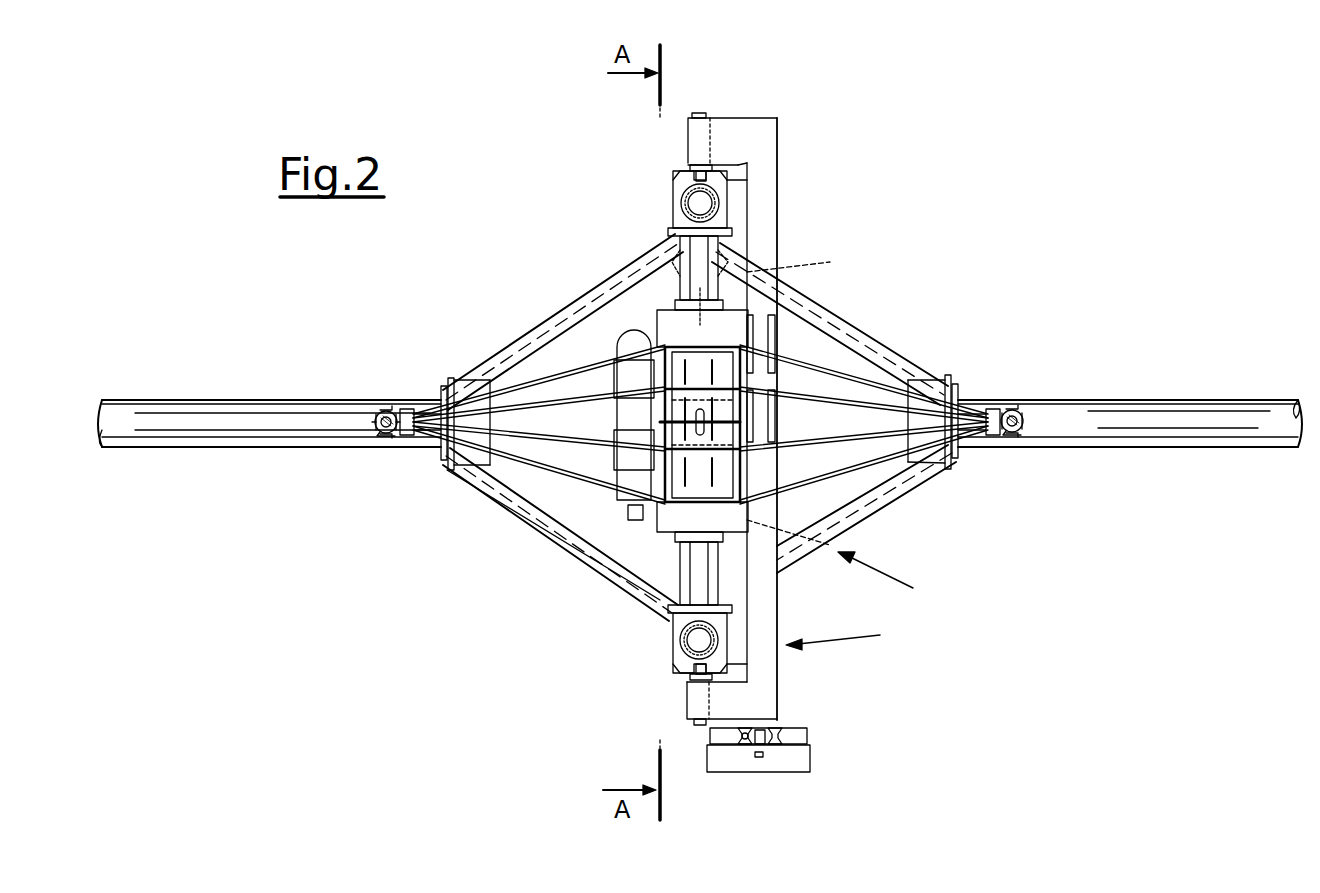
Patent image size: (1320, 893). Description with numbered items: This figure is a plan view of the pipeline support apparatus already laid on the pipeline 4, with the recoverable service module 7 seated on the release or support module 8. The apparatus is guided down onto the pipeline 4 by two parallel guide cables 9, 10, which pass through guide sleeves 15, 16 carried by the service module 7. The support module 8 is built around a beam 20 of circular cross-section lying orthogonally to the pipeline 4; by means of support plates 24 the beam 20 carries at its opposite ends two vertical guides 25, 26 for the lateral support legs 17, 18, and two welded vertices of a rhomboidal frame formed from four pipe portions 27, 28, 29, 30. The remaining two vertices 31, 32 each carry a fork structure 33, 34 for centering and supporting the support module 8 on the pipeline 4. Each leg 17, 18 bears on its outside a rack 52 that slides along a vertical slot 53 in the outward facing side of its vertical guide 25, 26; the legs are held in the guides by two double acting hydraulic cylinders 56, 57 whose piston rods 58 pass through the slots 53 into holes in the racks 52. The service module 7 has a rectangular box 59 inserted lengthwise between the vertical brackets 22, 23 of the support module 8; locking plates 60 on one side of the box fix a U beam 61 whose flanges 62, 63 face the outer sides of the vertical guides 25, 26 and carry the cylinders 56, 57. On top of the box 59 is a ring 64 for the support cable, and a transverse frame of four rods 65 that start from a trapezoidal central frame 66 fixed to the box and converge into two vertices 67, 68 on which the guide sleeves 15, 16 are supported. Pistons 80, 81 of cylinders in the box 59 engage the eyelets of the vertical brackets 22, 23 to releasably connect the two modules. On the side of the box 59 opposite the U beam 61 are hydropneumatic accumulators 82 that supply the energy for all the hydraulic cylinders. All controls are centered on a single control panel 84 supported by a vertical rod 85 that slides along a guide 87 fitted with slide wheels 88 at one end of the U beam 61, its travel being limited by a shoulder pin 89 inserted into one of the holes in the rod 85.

The pipeline 4 is at (226, 437).
The service module 7 is at (842, 635).
The release or support module 8 is at (883, 578).
The guide cable 9 is at (380, 413).
The guide cable 10 is at (1020, 414).
The guide sleeve 15 is at (394, 436).
The guide sleeve 16 is at (1024, 428).
The lateral support leg 17 is at (690, 205).
The lateral support leg 18 is at (690, 643).
The beam 20 is at (725, 300).
The vertical bracket 22 is at (797, 399).
The vertical bracket 23 is at (660, 540).
The support plate 24 is at (732, 232).
The vertical guide 25 is at (733, 200).
The vertical guide 26 is at (740, 640).
The pipe portion 27 is at (848, 318).
The pipe portion 28 is at (862, 512).
The pipe portion 29 is at (562, 527).
The pipe portion 30 is at (558, 306).
The vertex 31 is at (452, 470).
The vertex 32 is at (949, 470).
The fork structure 33 is at (443, 460).
The fork structure 34 is at (960, 456).
The rack 52 is at (735, 188).
The vertical slot 53 is at (684, 180).
The double acting hydraulic cylinder 56 is at (698, 134).
The double acting hydraulic cylinder 57 is at (695, 702).
The piston rod 58 is at (712, 170).
The rectangular box 59 is at (668, 325).
The locking plate 60 is at (752, 325).
The U beam 61 is at (765, 235).
The flange 62 is at (735, 128).
The flange 63 is at (745, 702).
The ring 64 is at (708, 428).
The rod 65 is at (540, 419).
The trapezoidal central frame 66 is at (700, 345).
The vertex 67 is at (406, 412).
The vertex 68 is at (995, 410).
The piston 80 is at (684, 284).
The piston 81 is at (699, 568).
The hydropneumatic accumulator 82 is at (630, 412).
The control panel 84 is at (806, 770).
The vertical rod 85 is at (757, 748).
The guide 87 is at (742, 742).
The slide wheel 88 is at (785, 736).
The shoulder pin 89 is at (760, 758).